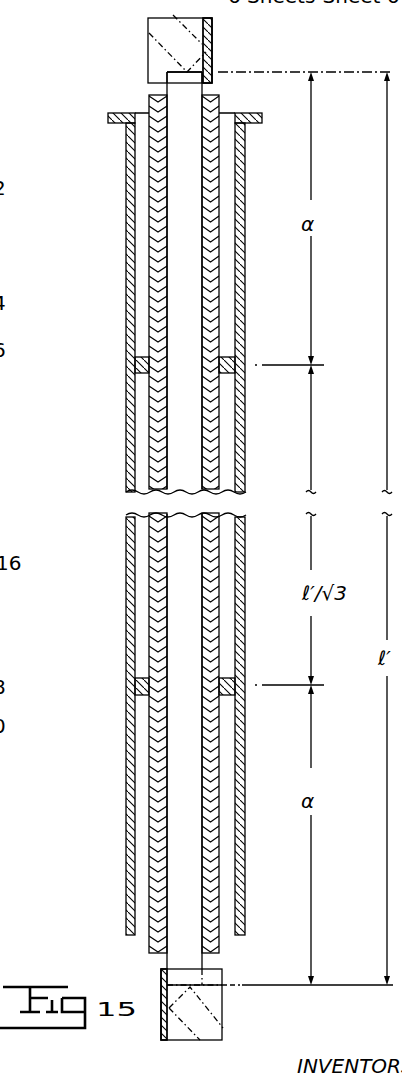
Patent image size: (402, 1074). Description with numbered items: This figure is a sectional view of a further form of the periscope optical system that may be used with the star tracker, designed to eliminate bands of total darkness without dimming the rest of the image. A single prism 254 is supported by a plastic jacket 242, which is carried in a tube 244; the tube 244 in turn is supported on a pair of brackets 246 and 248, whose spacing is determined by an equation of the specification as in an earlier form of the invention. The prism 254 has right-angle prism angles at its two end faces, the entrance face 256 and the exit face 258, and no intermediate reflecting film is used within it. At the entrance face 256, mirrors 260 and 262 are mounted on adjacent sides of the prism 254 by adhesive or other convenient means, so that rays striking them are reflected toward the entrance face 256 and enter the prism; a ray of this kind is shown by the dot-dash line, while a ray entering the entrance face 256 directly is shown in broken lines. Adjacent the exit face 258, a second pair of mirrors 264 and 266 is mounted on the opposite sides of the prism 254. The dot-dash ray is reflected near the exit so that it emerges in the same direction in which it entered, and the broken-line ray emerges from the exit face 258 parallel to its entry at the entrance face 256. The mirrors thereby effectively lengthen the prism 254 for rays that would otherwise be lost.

The plastic jacket 242 is at (220, 303).
The tube 244 is at (219, 256).
The bracket 246 is at (236, 358).
The bracket 248 is at (228, 697).
The prism 254 is at (188, 823).
The entrance face 256 is at (165, 70).
The exit face 258 is at (224, 985).
The mirror 260 is at (148, 27).
The mirror 262 is at (205, 55).
The mirror 264 is at (161, 1028).
The mirror 266 is at (222, 1010).